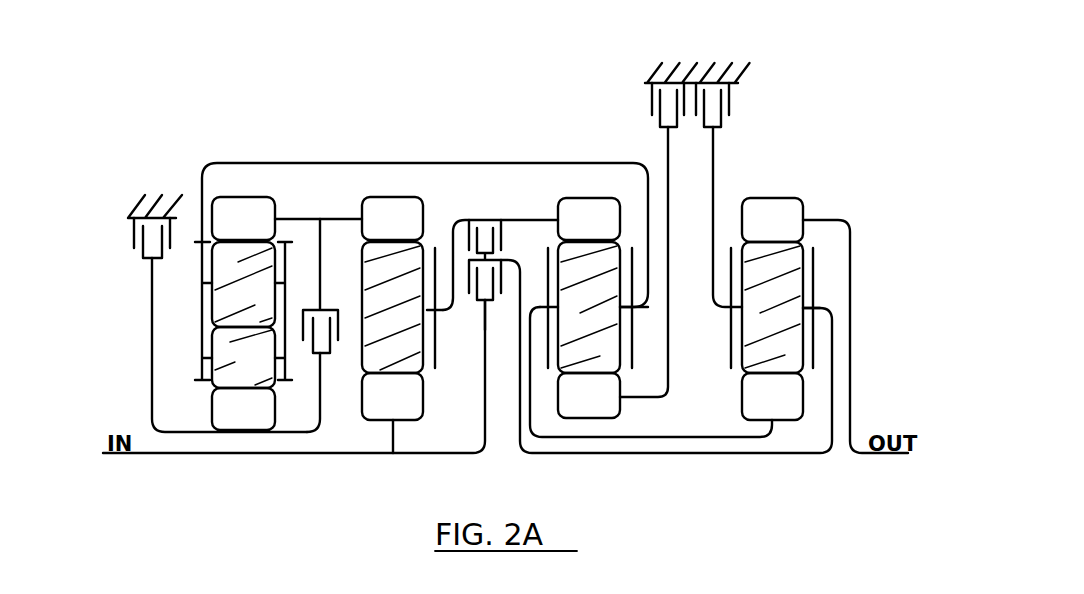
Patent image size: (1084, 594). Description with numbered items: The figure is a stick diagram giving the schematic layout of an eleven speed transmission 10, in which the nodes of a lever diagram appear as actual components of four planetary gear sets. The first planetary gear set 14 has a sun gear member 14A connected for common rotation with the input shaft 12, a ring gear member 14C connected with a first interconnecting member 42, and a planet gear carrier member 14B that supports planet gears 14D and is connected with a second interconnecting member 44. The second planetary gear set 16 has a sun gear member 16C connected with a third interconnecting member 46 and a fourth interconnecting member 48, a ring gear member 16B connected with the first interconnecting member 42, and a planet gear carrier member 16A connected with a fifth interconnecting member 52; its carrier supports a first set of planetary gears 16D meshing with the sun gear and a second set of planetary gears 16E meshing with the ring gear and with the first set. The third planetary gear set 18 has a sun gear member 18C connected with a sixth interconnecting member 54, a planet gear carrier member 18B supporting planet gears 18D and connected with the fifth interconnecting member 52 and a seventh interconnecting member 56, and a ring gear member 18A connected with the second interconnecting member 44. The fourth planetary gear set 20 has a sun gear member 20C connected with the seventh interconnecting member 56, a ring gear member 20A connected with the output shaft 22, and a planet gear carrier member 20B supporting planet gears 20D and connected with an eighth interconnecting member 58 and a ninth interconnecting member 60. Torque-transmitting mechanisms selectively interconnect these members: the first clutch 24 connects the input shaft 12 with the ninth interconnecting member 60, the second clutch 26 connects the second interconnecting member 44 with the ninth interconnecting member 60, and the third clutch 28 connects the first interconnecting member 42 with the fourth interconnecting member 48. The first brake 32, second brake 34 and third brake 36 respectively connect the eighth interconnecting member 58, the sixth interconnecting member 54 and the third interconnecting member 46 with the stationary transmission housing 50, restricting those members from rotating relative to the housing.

The eleven speed transmission 10 is at (818, 72).
The input shaft 12 is at (128, 457).
The first planetary gear set 14 is at (423, 362).
The sun gear member 14A is at (392, 413).
The planet gear carrier member 14B is at (436, 350).
The ring gear member 14C is at (392, 218).
The planet gears 14D is at (392, 307).
The second planetary gear set 16 is at (192, 362).
The planet gear carrier member 16A is at (200, 315).
The ring gear member 16B is at (243, 218).
The sun gear member 16C is at (243, 409).
The first set of planetary gears 16D is at (243, 357).
The second set of planetary gears 16E is at (243, 284).
The third planetary gear set 18 is at (627, 363).
The ring gear member 18A is at (589, 219).
The planet gear carrier member 18B is at (634, 353).
The sun gear member 18C is at (589, 395).
The planet gears 18D is at (589, 307).
The fourth planetary gear set 20 is at (800, 363).
The ring gear member 20A is at (772, 220).
The planet gear carrier member 20B is at (815, 282).
The sun gear member 20C is at (772, 396).
The planet gears 20D is at (772, 307).
The output shaft 22 is at (880, 456).
The first clutch 24 is at (477, 300).
The second clutch 26 is at (463, 230).
The third clutch 28 is at (341, 309).
The first brake 32 is at (729, 108).
The second brake 34 is at (652, 108).
The third brake 36 is at (134, 240).
The first interconnecting member 42 is at (336, 219).
The second interconnecting member 44 is at (520, 219).
The third interconnecting member 46 is at (150, 397).
The fourth interconnecting member 48 is at (322, 405).
The transmission housing 50 is at (137, 206).
The fifth interconnecting member 52 is at (355, 163).
The sixth interconnecting member 54 is at (668, 157).
The seventh interconnecting member 56 is at (680, 456).
The eighth interconnecting member 58 is at (714, 170).
The ninth interconnecting member 60 is at (833, 352).